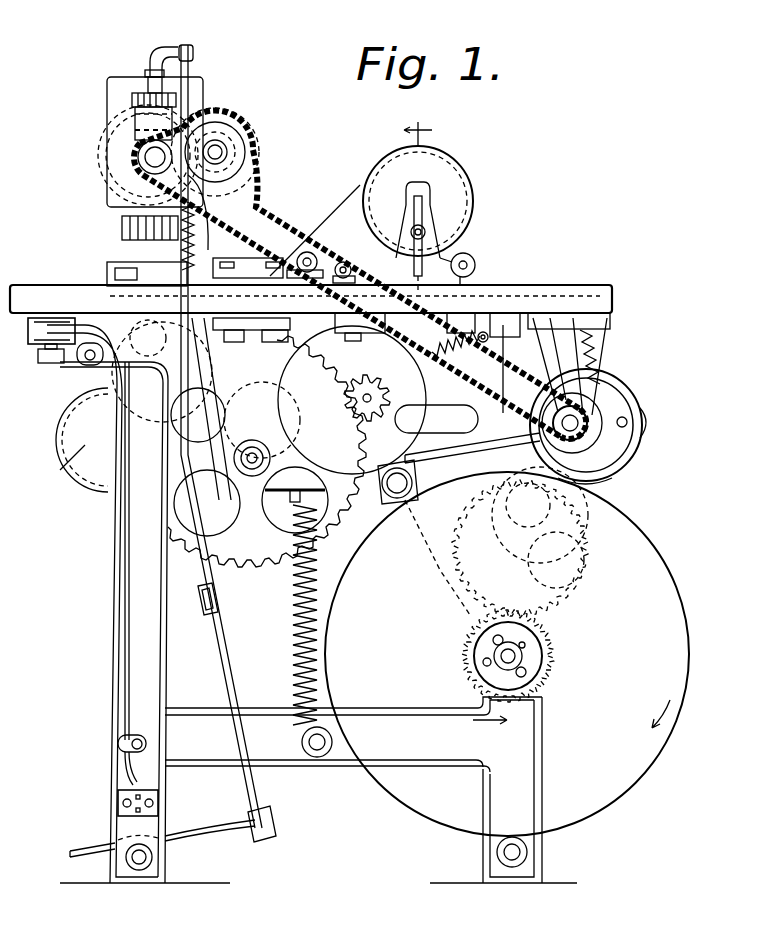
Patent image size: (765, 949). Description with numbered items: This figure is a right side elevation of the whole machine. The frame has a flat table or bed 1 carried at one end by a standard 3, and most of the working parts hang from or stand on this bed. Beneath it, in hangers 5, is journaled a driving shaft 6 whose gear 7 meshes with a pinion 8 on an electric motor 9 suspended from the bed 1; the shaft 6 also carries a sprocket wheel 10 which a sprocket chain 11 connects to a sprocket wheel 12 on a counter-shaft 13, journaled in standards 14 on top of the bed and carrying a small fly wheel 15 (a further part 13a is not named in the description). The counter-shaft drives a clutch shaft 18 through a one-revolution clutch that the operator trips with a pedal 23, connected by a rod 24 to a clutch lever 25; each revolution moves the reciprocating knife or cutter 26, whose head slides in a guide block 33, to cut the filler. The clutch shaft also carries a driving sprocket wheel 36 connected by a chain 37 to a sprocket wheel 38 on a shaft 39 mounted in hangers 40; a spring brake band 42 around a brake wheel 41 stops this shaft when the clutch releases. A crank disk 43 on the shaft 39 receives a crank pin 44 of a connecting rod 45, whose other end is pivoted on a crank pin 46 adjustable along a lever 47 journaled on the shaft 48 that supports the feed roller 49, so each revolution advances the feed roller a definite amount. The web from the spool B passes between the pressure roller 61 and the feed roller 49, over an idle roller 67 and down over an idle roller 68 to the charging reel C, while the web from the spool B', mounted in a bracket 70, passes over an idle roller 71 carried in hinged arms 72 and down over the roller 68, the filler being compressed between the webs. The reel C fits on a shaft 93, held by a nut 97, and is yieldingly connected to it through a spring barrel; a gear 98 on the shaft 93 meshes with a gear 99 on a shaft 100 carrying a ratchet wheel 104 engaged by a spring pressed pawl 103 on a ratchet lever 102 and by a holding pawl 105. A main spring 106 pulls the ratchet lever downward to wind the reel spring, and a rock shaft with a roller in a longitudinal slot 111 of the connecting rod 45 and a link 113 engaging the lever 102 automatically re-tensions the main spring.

The table or bed 1 is at (538, 293).
The standard 3 is at (110, 599).
The hangers 5 is at (252, 396).
The driving shaft 6 is at (250, 463).
The gear 7 is at (262, 568).
The pinion 8 is at (372, 395).
The electric motor 9 is at (425, 210).
The sprocket wheel 10 is at (220, 544).
The sprocket chain 11 is at (257, 207).
The sprocket wheel 12 is at (220, 152).
The counter-shaft 13 is at (218, 147).
The spring 13a is at (567, 462).
The standards 14 is at (234, 206).
The fly wheel 15 is at (212, 115).
The clutch shaft 18 is at (140, 160).
The pedal 23 is at (217, 834).
The rod 24 is at (190, 80).
The clutch lever 25 is at (163, 52).
The reciprocating knife or cutter 26 is at (121, 229).
The guide block 33 is at (116, 88).
The driving sprocket wheel 36 is at (145, 172).
The chain 37 is at (288, 226).
The sprocket wheel 38 is at (612, 475).
The shaft 39 is at (600, 410).
The hangers 40 is at (603, 349).
The brake wheel 41 is at (610, 447).
The spring brake band 42 is at (593, 400).
The crank disk 43 is at (608, 478).
The crank pin 44 is at (628, 421).
The connecting rod 45 is at (644, 426).
The crank pin 46 is at (105, 405).
The lever 47 is at (93, 368).
The shaft 48 is at (140, 328).
The feed roller 49 is at (113, 292).
The pressure roller 61 is at (212, 392).
The idle roller 67 is at (262, 307).
The idle roller 68 is at (350, 370).
The bracket 70 is at (446, 263).
The idle roller 71 is at (312, 246).
The arms 72 is at (326, 257).
The shaft 93 is at (545, 645).
The nut 97 is at (557, 678).
The gear 98 is at (577, 661).
The gear 99 is at (550, 592).
The shaft 100 is at (535, 545).
The ratchet lever 102 is at (373, 497).
The spring pressed pawl 103 is at (450, 562).
The ratchet wheel 104 is at (542, 518).
The holding pawl 105 is at (578, 571).
The main spring 106 is at (298, 610).
The longitudinal slot 111 is at (433, 410).
The link 113 is at (448, 453).
The web-holding spool B is at (62, 472).
The web-holding spool B' is at (434, 201).
The charging reel C is at (507, 654).